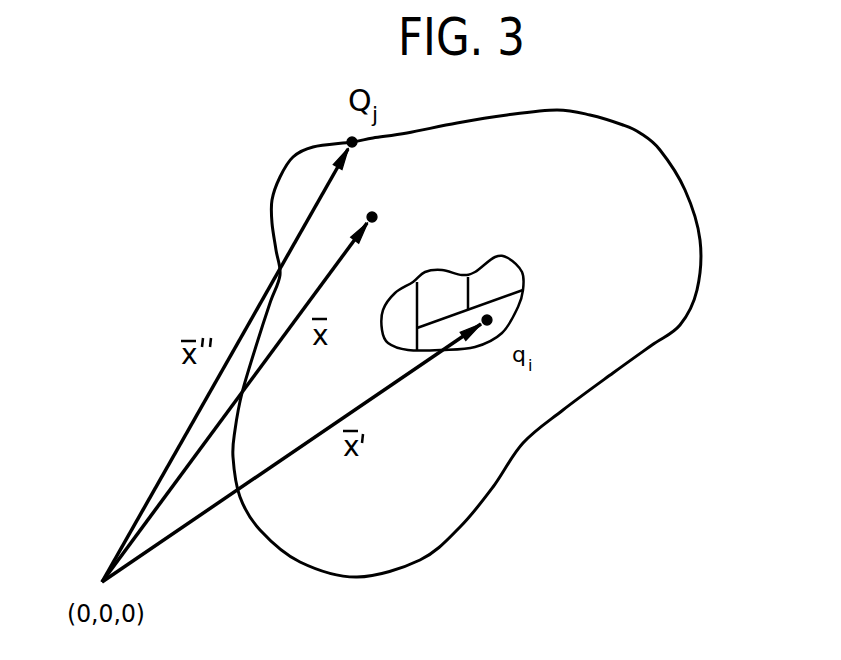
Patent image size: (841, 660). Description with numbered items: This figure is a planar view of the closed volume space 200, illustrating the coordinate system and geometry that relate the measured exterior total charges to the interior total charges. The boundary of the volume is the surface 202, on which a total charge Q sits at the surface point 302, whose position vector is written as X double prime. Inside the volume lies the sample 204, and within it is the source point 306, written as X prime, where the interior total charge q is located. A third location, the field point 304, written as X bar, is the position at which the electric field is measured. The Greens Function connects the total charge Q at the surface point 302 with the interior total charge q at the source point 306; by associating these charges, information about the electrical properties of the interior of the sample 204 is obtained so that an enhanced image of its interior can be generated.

The closed volume space 200 is at (193, 140).
The surface 202 is at (630, 128).
The sample 204 is at (521, 264).
The surface point 302 is at (350, 140).
The field point 304 is at (375, 214).
The source point 306 is at (521, 302).